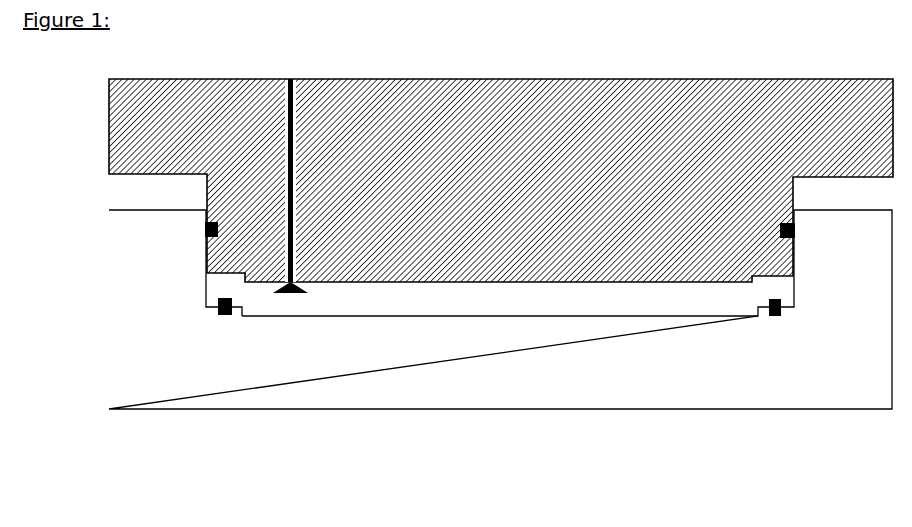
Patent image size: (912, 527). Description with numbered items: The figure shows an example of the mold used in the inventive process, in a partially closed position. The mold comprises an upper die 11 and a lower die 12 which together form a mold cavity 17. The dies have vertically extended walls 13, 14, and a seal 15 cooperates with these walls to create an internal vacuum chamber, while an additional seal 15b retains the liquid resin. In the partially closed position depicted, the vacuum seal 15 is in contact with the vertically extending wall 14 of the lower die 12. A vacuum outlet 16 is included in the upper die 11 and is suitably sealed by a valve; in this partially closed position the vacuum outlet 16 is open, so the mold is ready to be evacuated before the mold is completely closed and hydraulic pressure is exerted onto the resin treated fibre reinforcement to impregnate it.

The upper die 11 is at (582, 267).
The lower die 12 is at (435, 340).
The vertically extended wall 13 is at (802, 194).
The vertically extended wall 14 is at (790, 290).
The seal 15 is at (205, 240).
The additional seal 15b is at (226, 318).
The vacuum outlet 16 is at (302, 220).
The mold cavity 17 is at (507, 300).